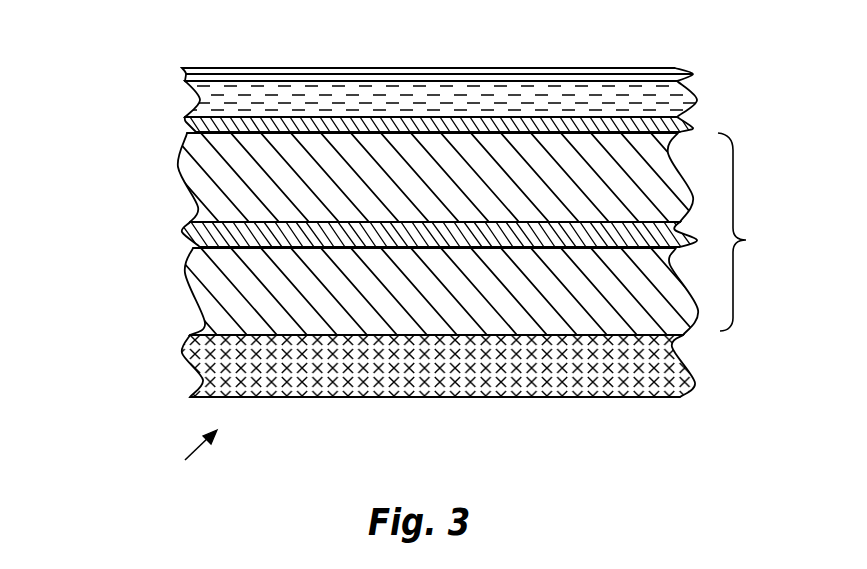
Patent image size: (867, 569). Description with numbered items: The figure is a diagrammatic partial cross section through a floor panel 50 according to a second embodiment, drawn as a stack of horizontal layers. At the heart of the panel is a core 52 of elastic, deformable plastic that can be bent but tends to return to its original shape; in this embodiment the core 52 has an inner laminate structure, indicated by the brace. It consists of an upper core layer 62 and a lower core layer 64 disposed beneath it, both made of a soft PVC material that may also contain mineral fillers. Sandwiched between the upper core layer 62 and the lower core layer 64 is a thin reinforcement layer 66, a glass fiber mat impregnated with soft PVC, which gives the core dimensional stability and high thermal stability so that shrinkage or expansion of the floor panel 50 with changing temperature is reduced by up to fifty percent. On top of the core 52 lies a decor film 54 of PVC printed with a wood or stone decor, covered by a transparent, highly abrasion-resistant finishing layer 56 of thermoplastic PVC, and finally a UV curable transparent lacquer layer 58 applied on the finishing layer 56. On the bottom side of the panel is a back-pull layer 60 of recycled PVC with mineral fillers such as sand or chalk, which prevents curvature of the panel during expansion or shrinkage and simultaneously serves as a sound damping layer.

The floor panel 50 is at (179, 465).
The core 52 is at (755, 232).
The decor film 54 is at (187, 127).
The finishing layer 56 is at (188, 92).
The lacquer layer 58 is at (186, 73).
The back-pull layer 60 is at (232, 380).
The upper core layer 62 is at (233, 176).
The lower core layer 64 is at (233, 300).
The reinforcement layer 66 is at (200, 239).